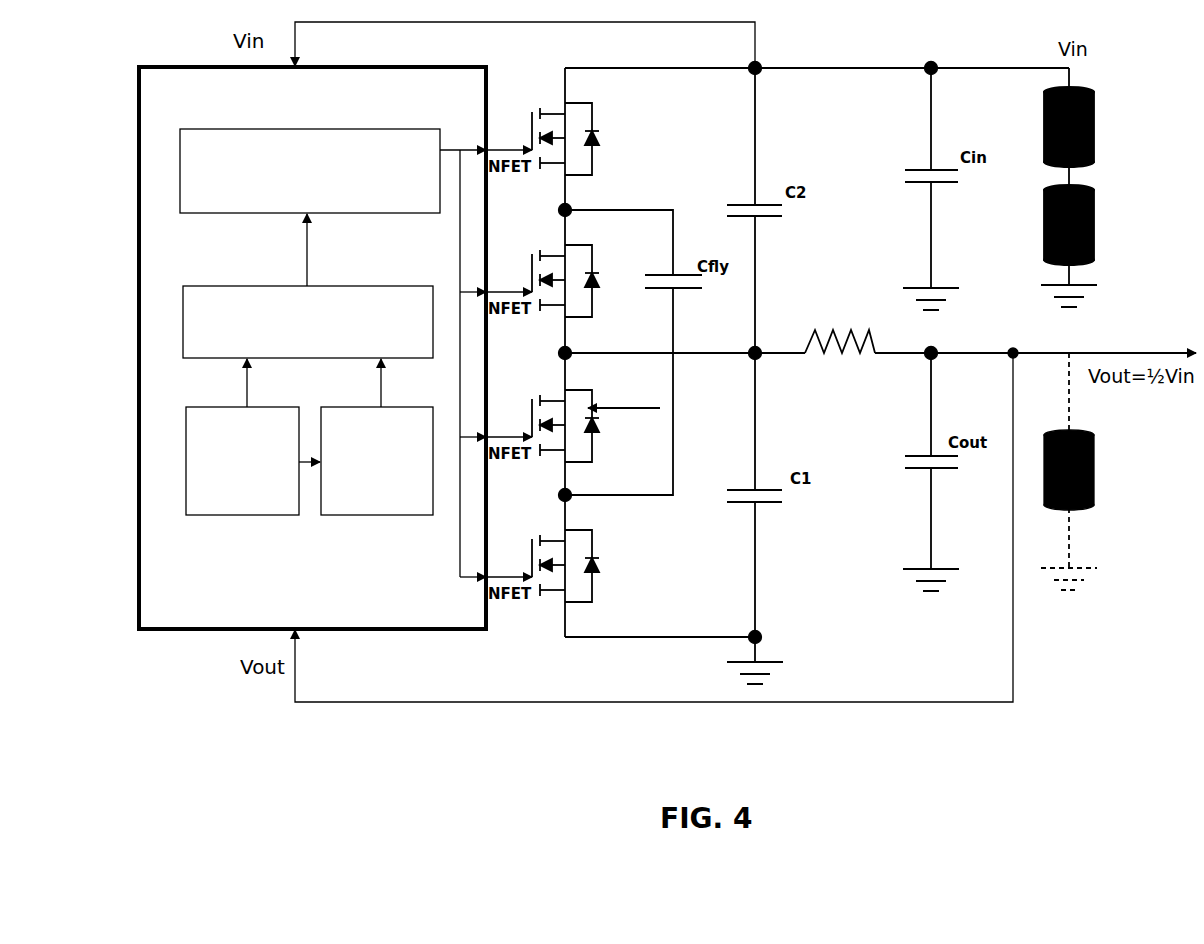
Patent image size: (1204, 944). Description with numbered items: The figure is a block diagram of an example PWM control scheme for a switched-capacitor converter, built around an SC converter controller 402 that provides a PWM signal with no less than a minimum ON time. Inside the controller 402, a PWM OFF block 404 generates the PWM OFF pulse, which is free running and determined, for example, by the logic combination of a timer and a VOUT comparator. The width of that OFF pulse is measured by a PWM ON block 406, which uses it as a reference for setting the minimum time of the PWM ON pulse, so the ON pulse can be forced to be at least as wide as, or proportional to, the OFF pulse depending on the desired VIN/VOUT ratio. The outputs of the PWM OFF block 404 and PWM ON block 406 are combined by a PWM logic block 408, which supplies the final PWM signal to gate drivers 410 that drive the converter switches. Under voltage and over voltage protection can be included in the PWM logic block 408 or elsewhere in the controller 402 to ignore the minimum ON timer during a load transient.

The SC converter controller 402 is at (312, 348).
The PWM OFF block 404 is at (242, 461).
The PWM ON block 406 is at (377, 461).
The PWM logic block 408 is at (308, 322).
The gate drivers 410 is at (310, 171).